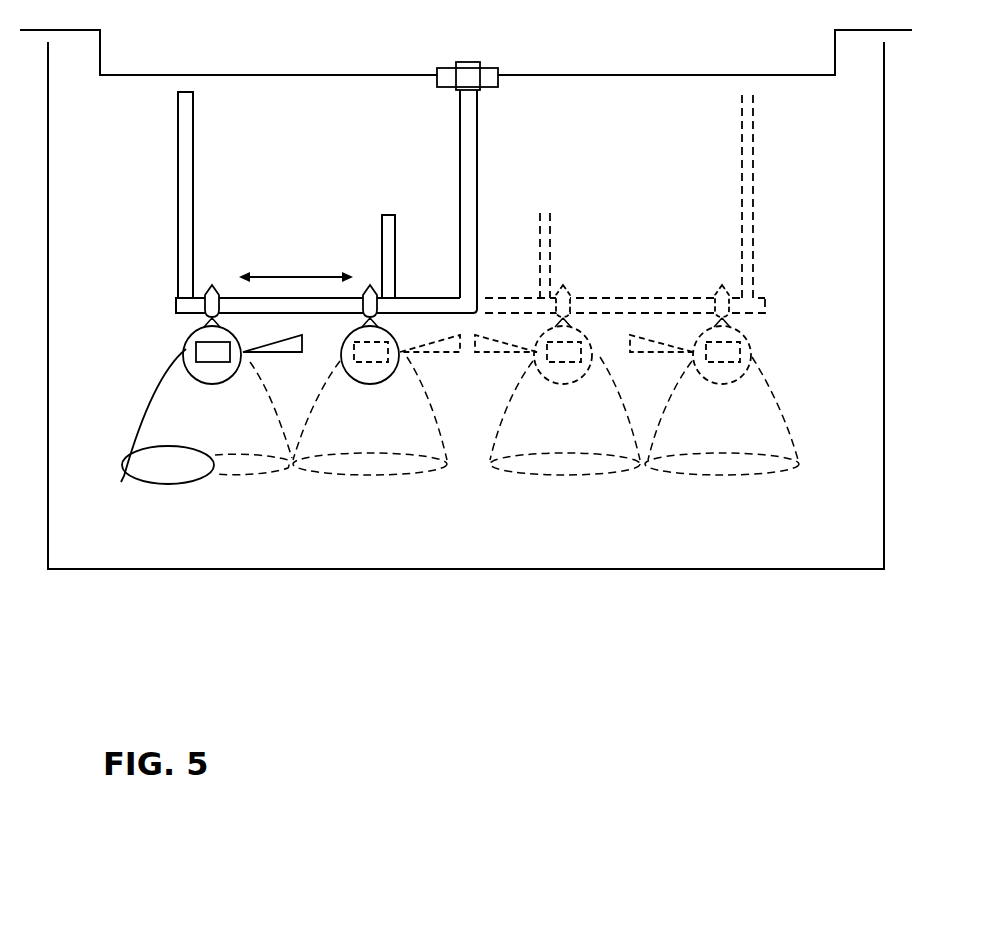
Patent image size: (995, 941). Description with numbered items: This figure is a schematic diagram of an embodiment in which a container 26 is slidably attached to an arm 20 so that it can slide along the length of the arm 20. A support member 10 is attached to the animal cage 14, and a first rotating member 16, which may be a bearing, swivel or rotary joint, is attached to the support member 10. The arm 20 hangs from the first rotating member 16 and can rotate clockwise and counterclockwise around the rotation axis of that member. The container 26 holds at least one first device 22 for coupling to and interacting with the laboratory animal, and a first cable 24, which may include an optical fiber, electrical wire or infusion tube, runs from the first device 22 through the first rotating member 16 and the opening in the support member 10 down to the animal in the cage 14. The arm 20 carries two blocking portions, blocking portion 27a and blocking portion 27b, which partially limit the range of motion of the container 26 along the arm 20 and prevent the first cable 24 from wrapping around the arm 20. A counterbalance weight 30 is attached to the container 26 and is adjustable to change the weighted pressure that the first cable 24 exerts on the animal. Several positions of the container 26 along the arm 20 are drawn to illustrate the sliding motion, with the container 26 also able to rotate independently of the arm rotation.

The support member 10 is at (299, 75).
The animal cage 14 is at (881, 175).
The first rotating member 16 is at (492, 65).
The arm 20 is at (478, 165).
The first device 22 is at (222, 360).
The first cable 24 is at (150, 392).
The container 26 is at (190, 341).
The blocking portion 27a is at (178, 257).
The blocking portion 27b is at (382, 250).
The counterbalance weight 30 is at (297, 352).